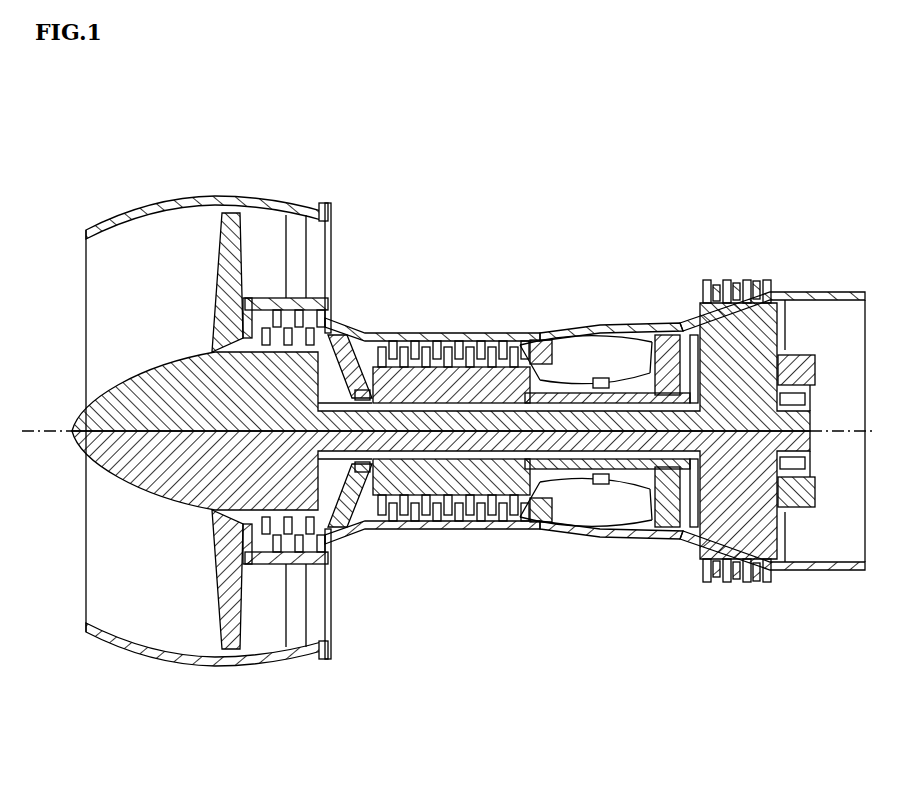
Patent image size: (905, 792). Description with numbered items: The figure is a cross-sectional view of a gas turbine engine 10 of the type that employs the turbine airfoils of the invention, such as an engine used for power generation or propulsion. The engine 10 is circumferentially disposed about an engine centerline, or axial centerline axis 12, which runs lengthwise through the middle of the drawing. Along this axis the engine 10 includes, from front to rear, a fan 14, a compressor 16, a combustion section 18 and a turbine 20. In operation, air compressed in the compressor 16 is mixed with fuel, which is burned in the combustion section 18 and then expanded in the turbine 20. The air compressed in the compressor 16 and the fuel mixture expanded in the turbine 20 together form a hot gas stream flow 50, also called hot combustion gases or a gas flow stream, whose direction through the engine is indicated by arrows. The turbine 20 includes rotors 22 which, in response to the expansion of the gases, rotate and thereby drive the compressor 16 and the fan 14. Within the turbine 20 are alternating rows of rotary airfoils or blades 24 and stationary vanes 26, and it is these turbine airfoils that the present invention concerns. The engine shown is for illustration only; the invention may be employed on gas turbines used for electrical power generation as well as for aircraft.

The gas turbine engine 10 is at (198, 172).
The axial centerline axis 12 is at (40, 428).
The fan 14 is at (218, 236).
The compressor 16 is at (536, 320).
The combustion section 18 is at (655, 318).
The turbine 20 is at (865, 292).
The rotors 22 is at (666, 462).
The blades 24 is at (760, 556).
The vanes 26 is at (721, 330).
The hot gas stream flow 50 is at (196, 300).